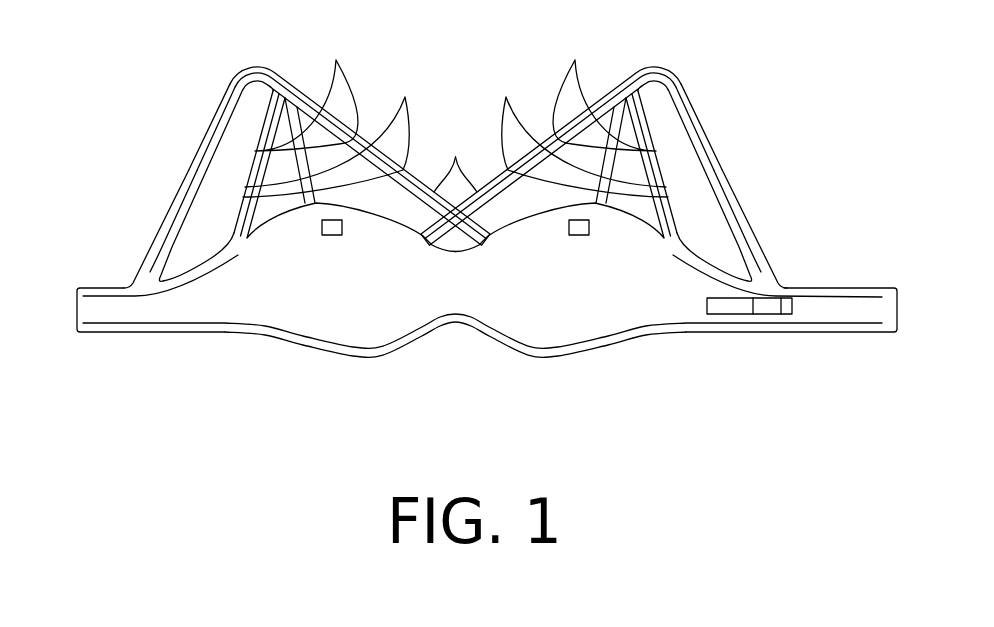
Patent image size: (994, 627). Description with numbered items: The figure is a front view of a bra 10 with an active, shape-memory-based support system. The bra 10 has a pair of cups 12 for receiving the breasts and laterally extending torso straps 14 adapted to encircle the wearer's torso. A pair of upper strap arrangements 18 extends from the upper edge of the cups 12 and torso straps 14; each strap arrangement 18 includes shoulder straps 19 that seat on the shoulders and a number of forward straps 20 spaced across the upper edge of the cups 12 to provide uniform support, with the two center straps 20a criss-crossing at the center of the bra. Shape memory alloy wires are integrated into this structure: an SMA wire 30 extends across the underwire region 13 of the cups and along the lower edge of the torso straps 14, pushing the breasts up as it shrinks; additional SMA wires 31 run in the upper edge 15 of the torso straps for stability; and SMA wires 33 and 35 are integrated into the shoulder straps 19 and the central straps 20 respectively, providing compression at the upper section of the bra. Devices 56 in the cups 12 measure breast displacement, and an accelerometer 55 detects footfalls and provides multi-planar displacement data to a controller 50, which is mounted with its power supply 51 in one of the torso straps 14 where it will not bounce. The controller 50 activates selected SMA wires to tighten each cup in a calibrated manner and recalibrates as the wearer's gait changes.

The bra 10 is at (798, 247).
The cups 12 is at (304, 312).
The underwire region 13 is at (383, 346).
The torso straps 14 is at (102, 288).
The upper edge of the torso straps 15 is at (123, 290).
The upper strap arrangements 18 is at (232, 79).
The shoulder straps 19 is at (211, 123).
The forward straps 20 is at (336, 60).
The center straps 20a is at (456, 157).
The SMA wire 30 is at (158, 323).
The SMA wires 31 is at (120, 291).
The SMA wires 33 is at (189, 170).
The SMA wires 35 is at (405, 97).
The controller 50 is at (770, 313).
The power supply 51 is at (728, 311).
The accelerometer 55 is at (790, 313).
The devices 56 is at (342, 236).